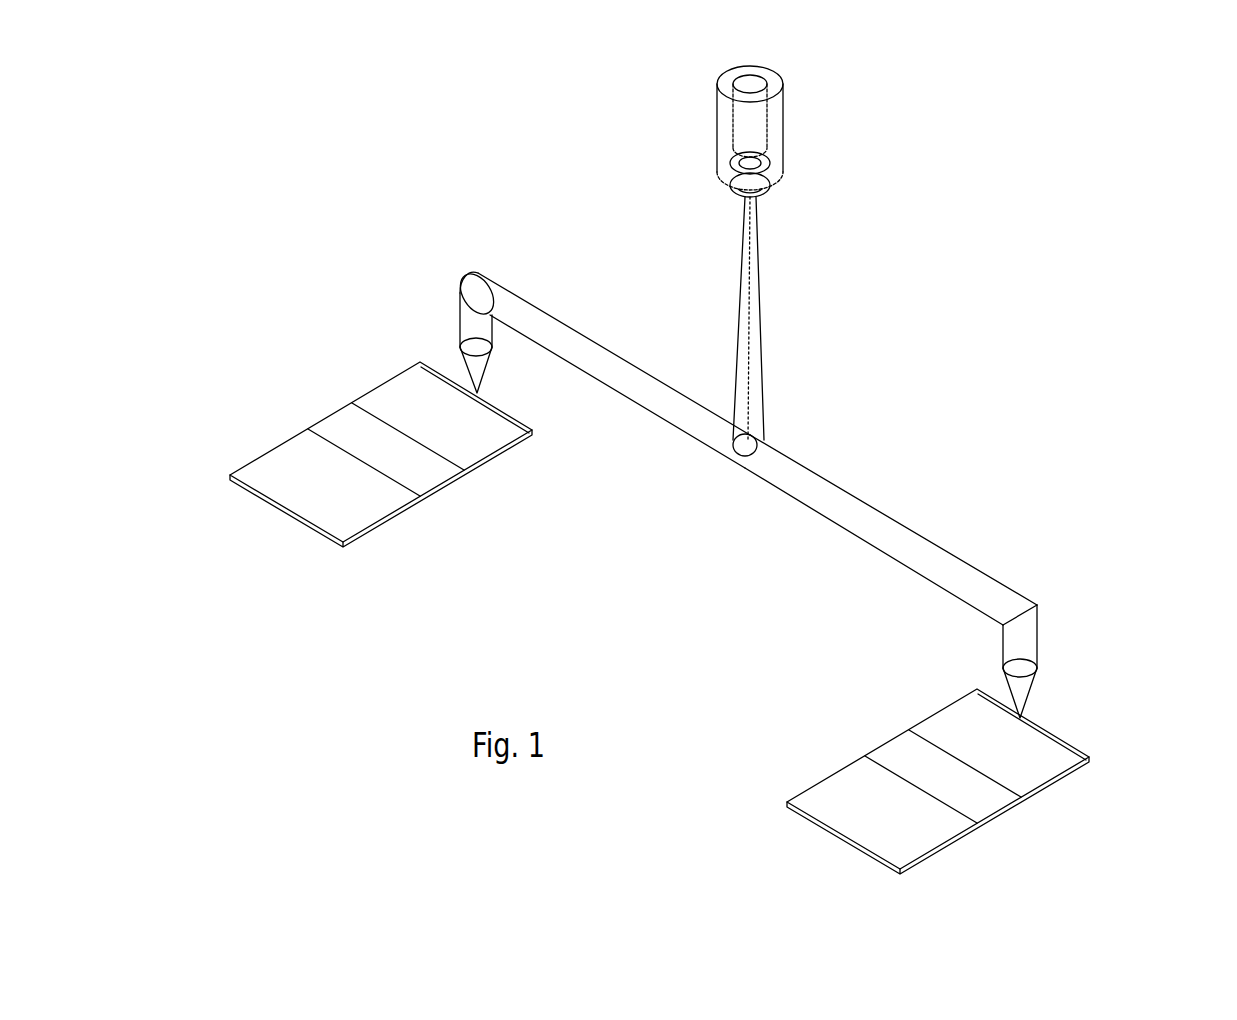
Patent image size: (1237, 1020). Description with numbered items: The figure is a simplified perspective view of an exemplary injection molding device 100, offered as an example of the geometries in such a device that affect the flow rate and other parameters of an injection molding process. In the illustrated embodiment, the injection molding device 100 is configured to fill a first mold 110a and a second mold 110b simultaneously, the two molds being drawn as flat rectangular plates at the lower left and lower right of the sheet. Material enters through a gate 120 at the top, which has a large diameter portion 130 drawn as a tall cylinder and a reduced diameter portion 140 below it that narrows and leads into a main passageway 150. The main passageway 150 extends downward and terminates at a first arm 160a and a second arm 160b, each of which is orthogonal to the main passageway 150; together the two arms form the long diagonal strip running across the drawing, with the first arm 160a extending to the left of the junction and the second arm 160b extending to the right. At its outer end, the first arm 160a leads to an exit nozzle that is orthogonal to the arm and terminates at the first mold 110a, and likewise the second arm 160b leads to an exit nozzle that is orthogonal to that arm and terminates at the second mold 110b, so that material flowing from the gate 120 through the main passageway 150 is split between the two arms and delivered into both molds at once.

The injection molding device 100 is at (1131, 152).
The first mold 110a is at (335, 418).
The second mold 110b is at (1062, 757).
The gate 120 is at (692, 128).
The large diameter portion 130 is at (768, 93).
The reduced diameter portion 140 is at (772, 182).
The main passageway 150 is at (752, 318).
The first arm 160a is at (557, 335).
The second arm 160b is at (848, 505).